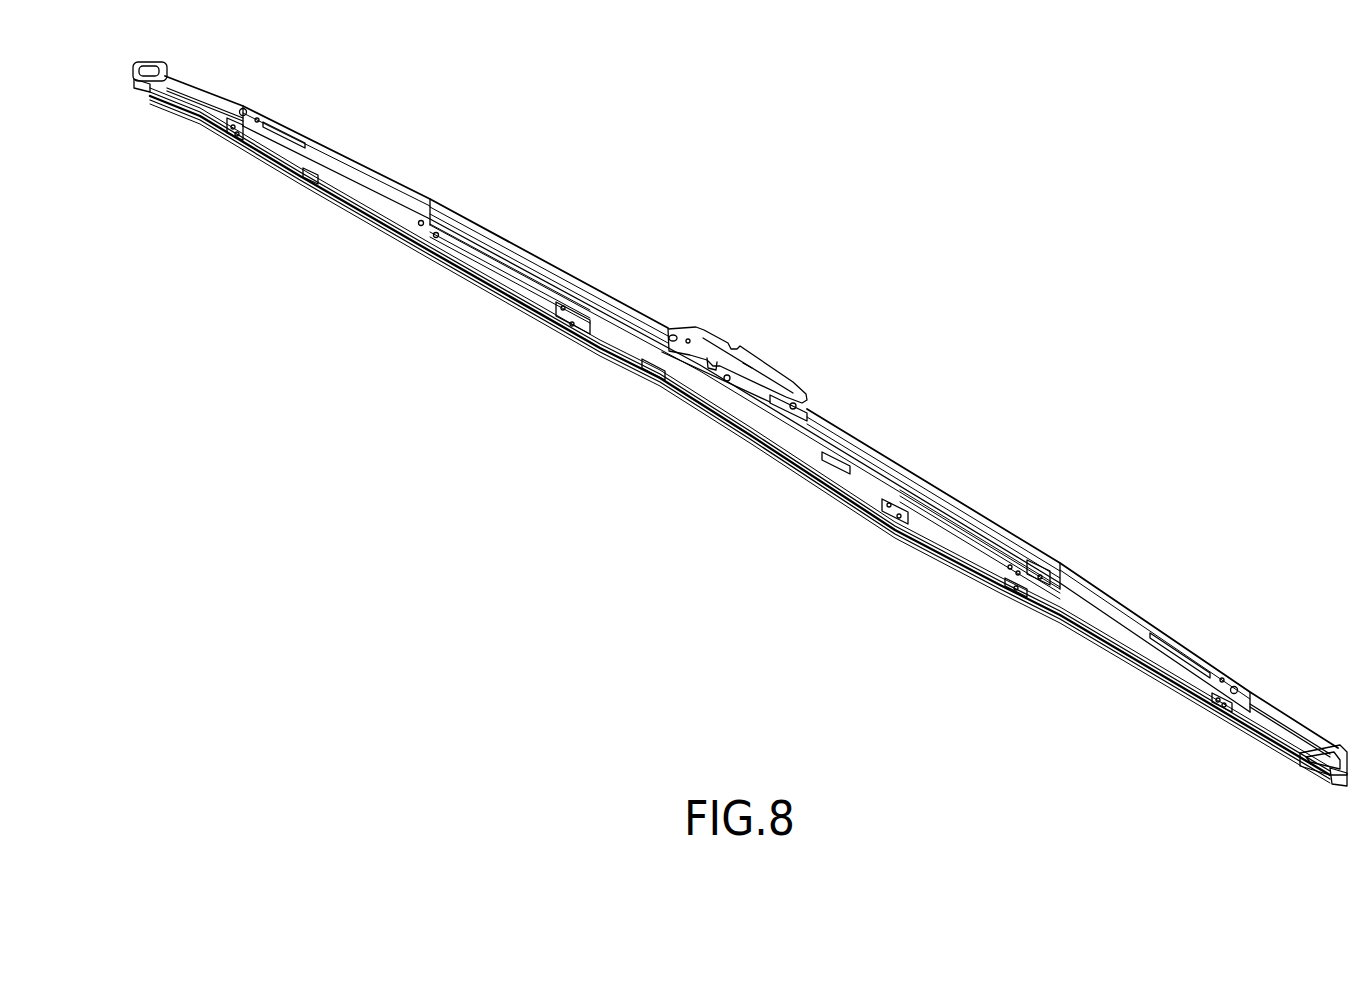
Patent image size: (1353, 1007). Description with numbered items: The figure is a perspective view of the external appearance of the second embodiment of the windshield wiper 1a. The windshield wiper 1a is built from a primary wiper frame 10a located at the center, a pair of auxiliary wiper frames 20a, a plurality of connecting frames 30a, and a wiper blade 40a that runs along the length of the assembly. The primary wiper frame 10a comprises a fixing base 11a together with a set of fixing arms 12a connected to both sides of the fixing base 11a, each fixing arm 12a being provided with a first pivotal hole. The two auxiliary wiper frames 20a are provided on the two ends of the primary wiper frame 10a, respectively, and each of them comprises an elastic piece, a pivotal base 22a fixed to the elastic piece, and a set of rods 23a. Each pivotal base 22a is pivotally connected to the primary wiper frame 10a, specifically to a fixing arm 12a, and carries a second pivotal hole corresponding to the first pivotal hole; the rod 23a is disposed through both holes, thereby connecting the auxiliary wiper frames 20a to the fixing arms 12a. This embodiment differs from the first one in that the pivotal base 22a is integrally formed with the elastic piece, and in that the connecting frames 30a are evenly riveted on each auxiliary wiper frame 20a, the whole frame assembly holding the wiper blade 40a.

The windshield wiper 1a is at (755, 40).
The primary wiper frame 10a is at (779, 350).
The fixing base 11a is at (751, 347).
The fixing arm 12a is at (922, 482).
The auxiliary wiper frame 20a is at (367, 154).
The pivotal base 22a is at (1043, 567).
The rod 23a is at (1030, 592).
The connecting frame 30a is at (231, 92).
The wiper blade 40a is at (1105, 652).